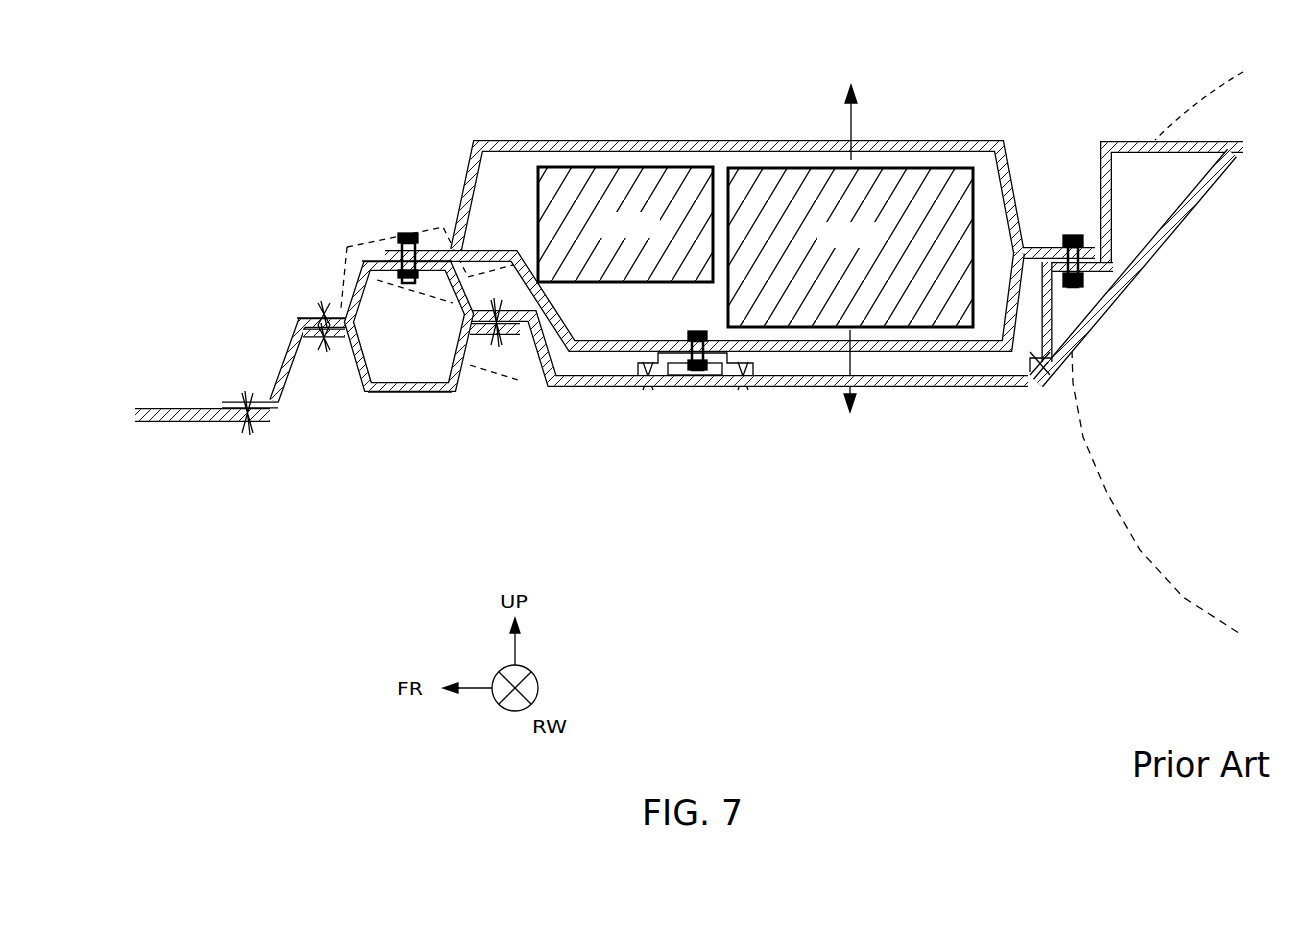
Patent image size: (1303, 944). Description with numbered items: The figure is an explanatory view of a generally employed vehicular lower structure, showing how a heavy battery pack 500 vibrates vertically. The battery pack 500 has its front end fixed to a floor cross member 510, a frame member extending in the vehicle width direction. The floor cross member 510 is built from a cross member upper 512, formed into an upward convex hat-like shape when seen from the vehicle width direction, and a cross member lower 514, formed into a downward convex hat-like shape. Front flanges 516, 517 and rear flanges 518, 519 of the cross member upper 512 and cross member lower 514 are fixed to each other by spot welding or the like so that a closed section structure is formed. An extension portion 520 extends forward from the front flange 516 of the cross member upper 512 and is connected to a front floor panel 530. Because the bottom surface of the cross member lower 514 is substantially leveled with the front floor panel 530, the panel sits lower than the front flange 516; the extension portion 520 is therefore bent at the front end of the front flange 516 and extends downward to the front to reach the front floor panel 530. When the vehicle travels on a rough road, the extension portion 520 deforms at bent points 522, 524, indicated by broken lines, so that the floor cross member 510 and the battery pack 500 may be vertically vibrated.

The battery pack 500 is at (653, 140).
The floor cross member 510 is at (402, 400).
The cross member upper 512 is at (352, 282).
The cross member lower 514 is at (438, 394).
The front flange 516 is at (318, 312).
The front flange 517 is at (336, 340).
The rear flange 518 is at (514, 310).
The rear flange 519 is at (521, 345).
The extension portion 520 is at (270, 378).
The bent point 522 is at (297, 316).
The bent point 524 is at (277, 418).
The front floor panel 530 is at (163, 408).